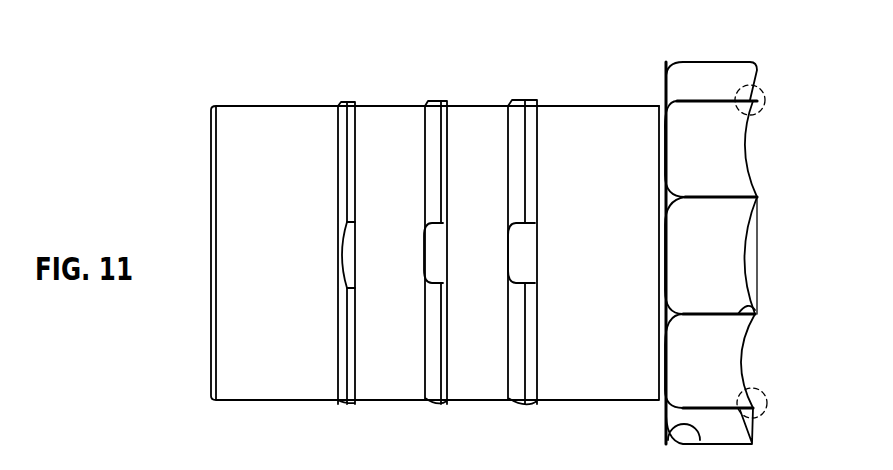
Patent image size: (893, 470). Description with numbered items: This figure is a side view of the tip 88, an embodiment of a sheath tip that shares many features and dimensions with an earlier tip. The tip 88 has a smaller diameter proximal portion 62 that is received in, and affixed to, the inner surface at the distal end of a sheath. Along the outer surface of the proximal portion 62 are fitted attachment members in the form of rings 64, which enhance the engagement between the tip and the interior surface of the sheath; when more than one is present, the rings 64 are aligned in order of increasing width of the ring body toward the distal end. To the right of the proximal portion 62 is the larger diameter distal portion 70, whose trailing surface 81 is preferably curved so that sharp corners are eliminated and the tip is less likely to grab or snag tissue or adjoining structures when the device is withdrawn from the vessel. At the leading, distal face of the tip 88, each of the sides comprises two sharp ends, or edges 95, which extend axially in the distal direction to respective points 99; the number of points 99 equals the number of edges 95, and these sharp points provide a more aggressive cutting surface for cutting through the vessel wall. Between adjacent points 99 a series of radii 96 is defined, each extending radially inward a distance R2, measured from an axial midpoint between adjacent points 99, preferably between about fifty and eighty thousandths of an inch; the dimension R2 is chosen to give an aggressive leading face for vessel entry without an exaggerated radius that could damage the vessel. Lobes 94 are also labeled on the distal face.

The proximal portion 62 is at (285, 177).
The rings 64 is at (348, 103).
The distal portion 70 is at (692, 62).
The curved trailing surface 81 is at (665, 118).
The tip 88 is at (572, 90).
The lobes 94 is at (712, 140).
The ends 95 is at (720, 100).
The radii 96 is at (747, 146).
The points 99 is at (766, 96).
The distance R2 is at (713, 253).